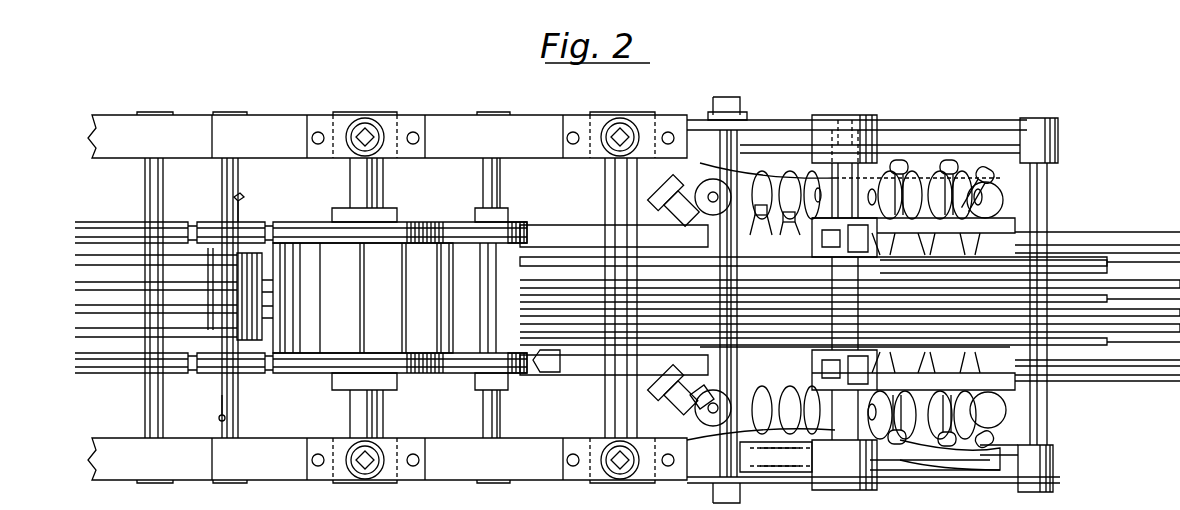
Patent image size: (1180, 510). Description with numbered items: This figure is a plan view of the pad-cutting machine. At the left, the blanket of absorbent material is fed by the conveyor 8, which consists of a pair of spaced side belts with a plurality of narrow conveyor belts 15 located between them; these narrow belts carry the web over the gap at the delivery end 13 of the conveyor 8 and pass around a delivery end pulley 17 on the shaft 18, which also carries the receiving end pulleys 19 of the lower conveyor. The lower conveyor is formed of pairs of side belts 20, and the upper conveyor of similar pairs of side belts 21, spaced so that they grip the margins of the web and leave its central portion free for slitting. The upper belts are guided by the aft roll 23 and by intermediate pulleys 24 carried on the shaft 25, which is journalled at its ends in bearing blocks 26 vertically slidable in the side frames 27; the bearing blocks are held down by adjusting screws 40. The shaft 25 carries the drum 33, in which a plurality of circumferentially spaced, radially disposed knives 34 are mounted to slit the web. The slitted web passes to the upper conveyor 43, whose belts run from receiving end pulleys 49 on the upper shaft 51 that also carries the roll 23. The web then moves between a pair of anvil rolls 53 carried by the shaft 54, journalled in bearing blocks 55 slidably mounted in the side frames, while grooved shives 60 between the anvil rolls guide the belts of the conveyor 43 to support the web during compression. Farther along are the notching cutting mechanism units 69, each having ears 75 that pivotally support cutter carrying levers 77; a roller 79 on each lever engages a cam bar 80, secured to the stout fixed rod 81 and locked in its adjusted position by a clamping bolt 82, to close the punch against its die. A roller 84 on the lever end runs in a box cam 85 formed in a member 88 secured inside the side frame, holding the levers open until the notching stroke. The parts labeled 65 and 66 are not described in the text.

The conveyor 8 is at (100, 235).
The delivery end 13 is at (138, 386).
The narrow conveyor belts 15 is at (112, 258).
The delivery end pulley 17 is at (215, 322).
The shaft 18 is at (220, 416).
The receiving end pulleys 19 is at (250, 222).
The side belts 20 is at (208, 228).
The side belts 21 is at (298, 228).
The aft roll 23 is at (464, 220).
The intermediate pulleys 24 is at (320, 212).
The shaft 25 is at (350, 415).
The bearing blocks 26 is at (352, 112).
The side frames 27 is at (470, 114).
The drum 33 is at (392, 309).
The knives 34 is at (360, 270).
The adjusting screws 40 is at (372, 130).
The upper conveyor 43 is at (553, 242).
The receiving end pulleys 49 is at (512, 228).
The upper shaft 51 is at (486, 183).
The anvil rolls 53 is at (580, 238).
The shaft 54 is at (607, 412).
The bearing blocks 55 is at (636, 113).
The pulleys or shives 60 is at (542, 366).
The bar 65 is at (1108, 264).
The rail 66 is at (703, 347).
The cutting mechanism units 69 is at (688, 176).
The ears 75 is at (898, 445).
The cutter carrying levers 77 is at (946, 446).
The roller 79 is at (680, 410).
The cam bar 80 is at (1015, 220).
The fixed bar or rod 81 is at (845, 113).
The clamping bolt 82 is at (728, 303).
The roller 84 is at (978, 162).
The box cam 85 is at (1020, 458).
The member 88 is at (1015, 128).